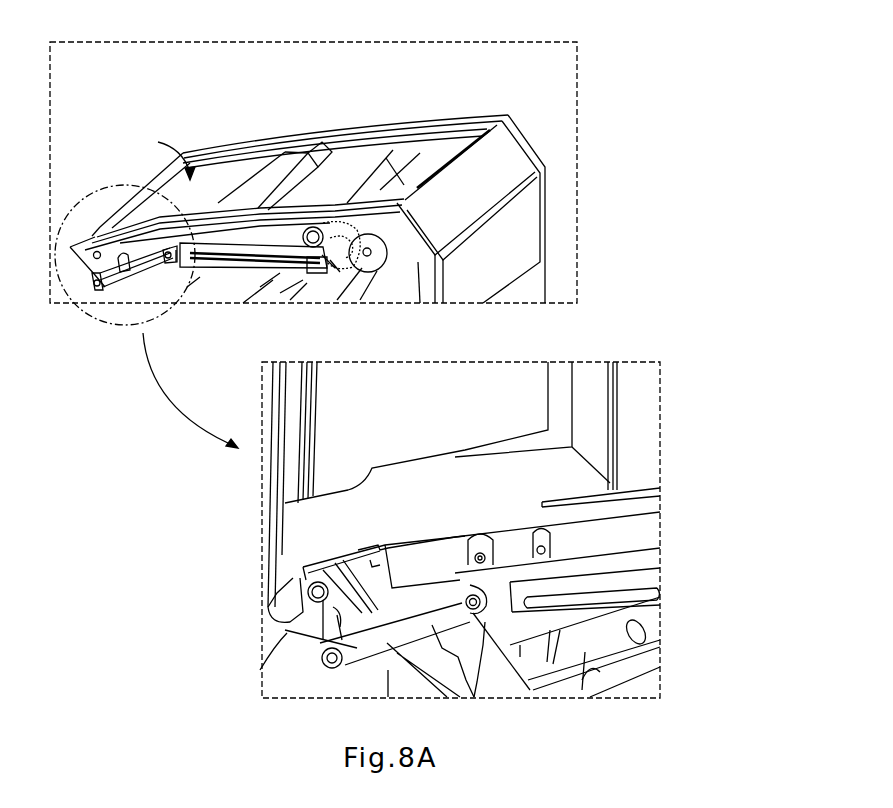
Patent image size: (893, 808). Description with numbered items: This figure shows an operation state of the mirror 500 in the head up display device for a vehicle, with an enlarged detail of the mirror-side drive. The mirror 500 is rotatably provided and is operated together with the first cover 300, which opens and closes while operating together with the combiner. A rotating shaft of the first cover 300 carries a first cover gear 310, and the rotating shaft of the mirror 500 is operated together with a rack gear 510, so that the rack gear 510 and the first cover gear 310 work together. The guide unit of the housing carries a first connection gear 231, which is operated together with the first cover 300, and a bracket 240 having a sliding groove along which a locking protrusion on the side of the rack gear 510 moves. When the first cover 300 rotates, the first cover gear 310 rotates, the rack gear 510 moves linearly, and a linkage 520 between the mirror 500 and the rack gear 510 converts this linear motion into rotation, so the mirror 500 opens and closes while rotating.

The mirror 500 is at (242, 170).
The rack gear 510 is at (260, 247).
The linkage 520 is at (95, 233).
The first cover gear 310 is at (315, 226).
The bracket 240 is at (343, 218).
The first connection gear 231 is at (372, 232).
The first cover 300 is at (438, 150).